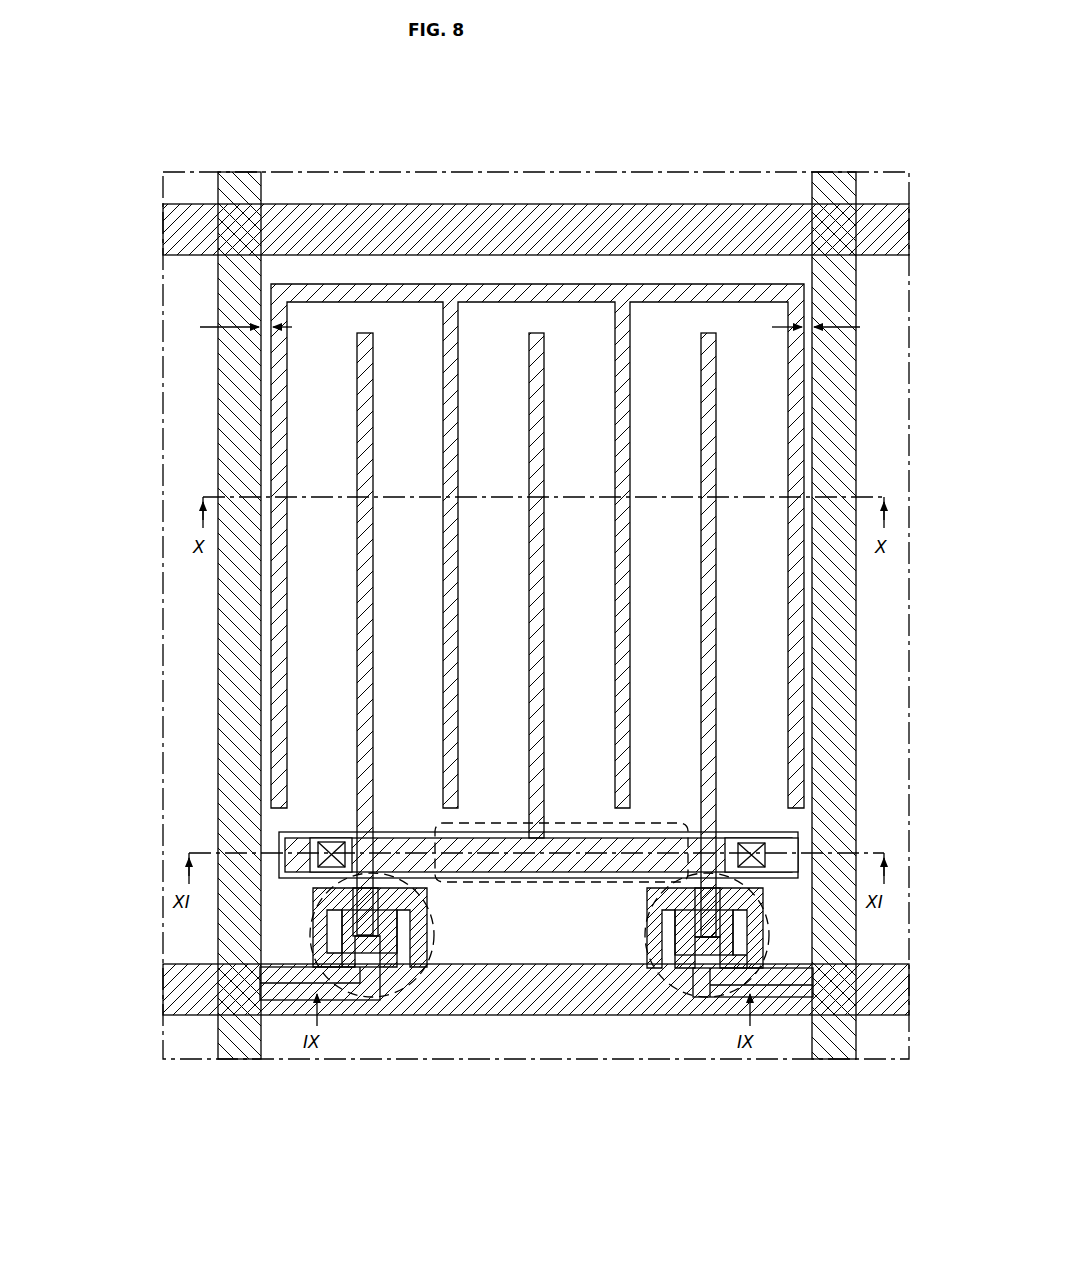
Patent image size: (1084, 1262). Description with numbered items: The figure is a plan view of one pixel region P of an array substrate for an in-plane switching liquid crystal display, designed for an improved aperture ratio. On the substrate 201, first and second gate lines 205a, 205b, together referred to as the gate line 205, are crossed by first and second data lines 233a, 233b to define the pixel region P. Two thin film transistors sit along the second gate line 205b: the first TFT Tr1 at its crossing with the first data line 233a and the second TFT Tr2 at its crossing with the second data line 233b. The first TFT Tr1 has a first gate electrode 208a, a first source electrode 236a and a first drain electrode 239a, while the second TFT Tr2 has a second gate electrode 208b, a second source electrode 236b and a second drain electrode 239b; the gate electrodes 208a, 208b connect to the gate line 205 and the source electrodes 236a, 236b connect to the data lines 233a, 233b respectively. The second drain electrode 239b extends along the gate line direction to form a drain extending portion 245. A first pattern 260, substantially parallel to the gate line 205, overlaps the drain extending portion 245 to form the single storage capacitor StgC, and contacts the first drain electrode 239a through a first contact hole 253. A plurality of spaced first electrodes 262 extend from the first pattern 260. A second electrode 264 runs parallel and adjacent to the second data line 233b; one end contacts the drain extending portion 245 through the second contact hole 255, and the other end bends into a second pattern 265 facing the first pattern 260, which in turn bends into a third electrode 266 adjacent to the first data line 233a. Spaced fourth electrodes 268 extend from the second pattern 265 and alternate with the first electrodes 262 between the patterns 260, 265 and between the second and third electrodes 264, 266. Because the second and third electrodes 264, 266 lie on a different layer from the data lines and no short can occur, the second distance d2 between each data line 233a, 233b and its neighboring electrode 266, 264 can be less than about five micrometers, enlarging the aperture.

The substrate 201 is at (784, 128).
The gate line 205 is at (472, 609).
The first gate line 205a is at (185, 245).
The second gate line 205b is at (185, 990).
The first data line 233a is at (240, 180).
The second data line 233b is at (832, 180).
The second pattern 265 is at (655, 300).
The third electrode 266 is at (284, 472).
The second electrode 264 is at (795, 468).
The fourth electrodes 268 is at (455, 472).
The first electrodes 262 is at (368, 592).
The first pattern 260 is at (480, 840).
The drain extending portion 245 is at (650, 872).
The first contact hole 253 is at (316, 862).
The second contact hole 255 is at (752, 841).
The storage capacitor StgC is at (515, 884).
The first TFT Tr1 is at (410, 995).
The second TFT Tr2 is at (695, 1000).
The first source electrode 236a is at (325, 975).
The second source electrode 236b is at (656, 978).
The first gate electrode 208a is at (393, 958).
The second gate electrode 208b is at (700, 960).
The first drain electrode 239a is at (372, 1004).
The second drain electrode 239b is at (770, 1002).
The pixel region P is at (772, 640).
The second distance d2 is at (540, 317).